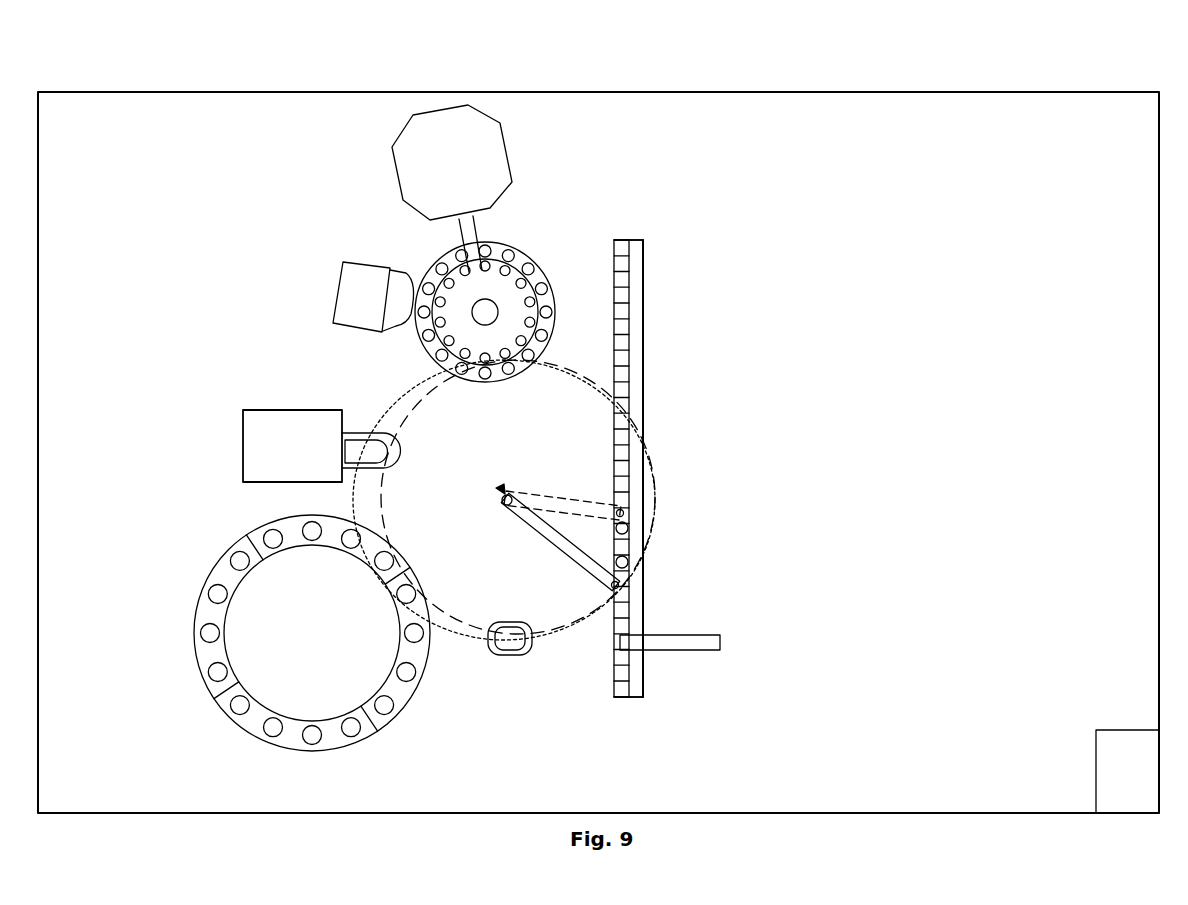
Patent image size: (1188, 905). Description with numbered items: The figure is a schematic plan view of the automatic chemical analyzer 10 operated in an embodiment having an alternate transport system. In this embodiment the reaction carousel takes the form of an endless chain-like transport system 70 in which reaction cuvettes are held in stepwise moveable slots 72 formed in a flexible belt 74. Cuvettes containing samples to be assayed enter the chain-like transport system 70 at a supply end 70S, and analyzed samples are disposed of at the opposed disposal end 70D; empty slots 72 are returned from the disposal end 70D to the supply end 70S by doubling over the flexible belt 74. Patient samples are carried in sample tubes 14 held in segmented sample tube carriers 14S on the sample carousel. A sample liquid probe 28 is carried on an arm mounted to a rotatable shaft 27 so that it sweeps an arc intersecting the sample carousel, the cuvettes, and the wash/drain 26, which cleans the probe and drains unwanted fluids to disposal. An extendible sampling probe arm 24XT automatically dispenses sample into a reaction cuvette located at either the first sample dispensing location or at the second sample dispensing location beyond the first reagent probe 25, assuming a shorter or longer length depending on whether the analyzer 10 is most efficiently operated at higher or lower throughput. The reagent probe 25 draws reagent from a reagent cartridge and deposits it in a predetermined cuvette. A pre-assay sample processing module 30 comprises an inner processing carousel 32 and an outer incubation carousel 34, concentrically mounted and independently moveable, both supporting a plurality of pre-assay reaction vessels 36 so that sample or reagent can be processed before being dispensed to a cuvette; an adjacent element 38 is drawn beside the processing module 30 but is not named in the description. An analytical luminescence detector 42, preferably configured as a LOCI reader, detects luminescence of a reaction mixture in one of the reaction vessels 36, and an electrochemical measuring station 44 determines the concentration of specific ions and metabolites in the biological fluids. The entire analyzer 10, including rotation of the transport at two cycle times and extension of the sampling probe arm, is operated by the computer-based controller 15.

The automatic chemical analyzer 10 is at (714, 92).
The sample tubes 14 is at (291, 655).
The sample tube carriers 14S is at (205, 572).
The computer-based controller 15 is at (1127, 771).
The extendible sampling probe arm 24XT is at (580, 497).
The first reagent probe 25 is at (683, 652).
The wash/drain 26 is at (523, 654).
The rotatable shaft 27 is at (500, 488).
The sample liquid probe 28 is at (606, 593).
The pre-assay sample processing module 30 is at (322, 320).
The inner processing carousel 32 is at (452, 243).
The outer incubation carousel 34 is at (463, 293).
The pre-assay reaction vessels 36 is at (432, 352).
The motor 38 is at (357, 262).
The analytical luminescence detector 42 is at (438, 108).
The electrochemical measuring station 44 is at (243, 430).
The chain-like transport system 70 is at (710, 471).
The disposal end 70D is at (625, 240).
The supply end 70S is at (622, 697).
The slots 72 is at (622, 354).
The flexible belt 74 is at (633, 290).